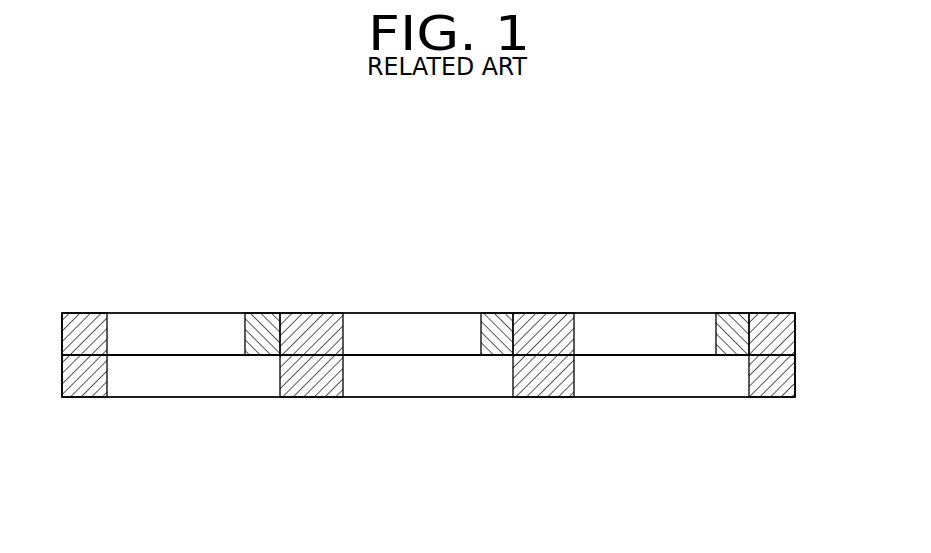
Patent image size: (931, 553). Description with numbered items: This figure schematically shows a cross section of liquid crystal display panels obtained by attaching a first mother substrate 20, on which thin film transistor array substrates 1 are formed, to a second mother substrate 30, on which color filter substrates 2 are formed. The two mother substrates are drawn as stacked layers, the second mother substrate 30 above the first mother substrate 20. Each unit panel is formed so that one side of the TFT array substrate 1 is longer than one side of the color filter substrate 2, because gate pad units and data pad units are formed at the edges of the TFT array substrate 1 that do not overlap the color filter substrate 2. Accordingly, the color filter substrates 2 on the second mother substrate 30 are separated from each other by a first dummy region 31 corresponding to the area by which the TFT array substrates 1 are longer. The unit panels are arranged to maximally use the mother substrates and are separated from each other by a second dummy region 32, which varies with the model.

The TFT array substrate 1 is at (175, 392).
The color filter substrate 2 is at (175, 320).
The first mother substrate 20 is at (806, 356).
The second mother substrate 30 is at (806, 313).
The first dummy region 31 is at (266, 320).
The second dummy region 32 is at (88, 320).